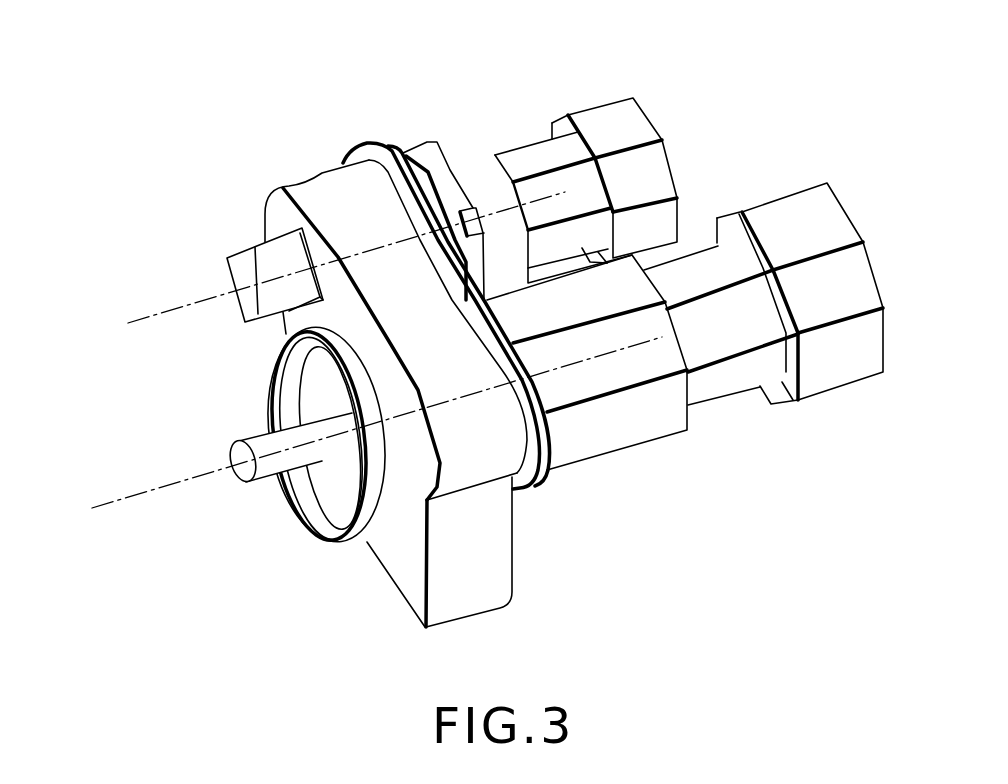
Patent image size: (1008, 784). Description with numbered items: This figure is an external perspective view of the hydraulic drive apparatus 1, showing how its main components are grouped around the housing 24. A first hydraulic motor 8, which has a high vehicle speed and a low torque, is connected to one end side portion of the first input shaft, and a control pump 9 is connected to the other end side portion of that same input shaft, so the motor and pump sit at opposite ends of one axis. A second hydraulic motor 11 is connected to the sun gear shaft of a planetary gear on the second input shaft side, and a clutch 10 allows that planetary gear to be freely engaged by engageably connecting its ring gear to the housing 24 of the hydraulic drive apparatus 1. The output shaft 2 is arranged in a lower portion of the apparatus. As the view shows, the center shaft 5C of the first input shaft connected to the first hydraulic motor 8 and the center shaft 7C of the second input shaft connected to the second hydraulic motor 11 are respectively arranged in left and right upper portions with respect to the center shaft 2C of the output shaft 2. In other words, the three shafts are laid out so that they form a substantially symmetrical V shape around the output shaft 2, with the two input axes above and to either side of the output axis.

The hydraulic drive apparatus 1 is at (487, 347).
The output shaft 2 is at (277, 481).
The center shaft of the output shaft 2C is at (173, 483).
The center shaft of the first input shaft 5C is at (173, 313).
The center shaft of the second input shaft 7C is at (403, 415).
The first hydraulic motor 8 is at (523, 157).
The control pump 9 is at (235, 254).
The clutch 10 is at (610, 437).
The second hydraulic motor 11 is at (730, 388).
The housing 24 is at (472, 600).